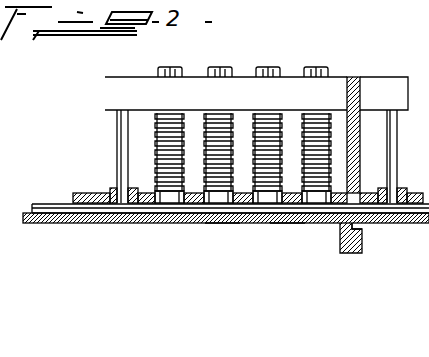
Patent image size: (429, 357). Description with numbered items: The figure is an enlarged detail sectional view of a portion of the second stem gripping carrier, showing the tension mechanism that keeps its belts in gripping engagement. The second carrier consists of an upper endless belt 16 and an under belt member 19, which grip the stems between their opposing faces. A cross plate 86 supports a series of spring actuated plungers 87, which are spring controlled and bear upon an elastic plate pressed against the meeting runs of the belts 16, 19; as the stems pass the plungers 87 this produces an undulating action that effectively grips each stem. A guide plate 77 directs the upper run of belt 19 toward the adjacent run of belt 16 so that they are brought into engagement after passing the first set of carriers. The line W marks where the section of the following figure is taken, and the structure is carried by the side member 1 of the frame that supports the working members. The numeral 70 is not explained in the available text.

The nut 70 is at (217, 66).
The cross plate 86 is at (107, 106).
The spring actuated plungers 87 is at (160, 192).
The upper endless belt 16 is at (40, 199).
The under belt member 19 is at (35, 224).
The section line w, w W is at (220, 227).
The guide plate 77 is at (288, 222).
The side member 1 is at (362, 241).